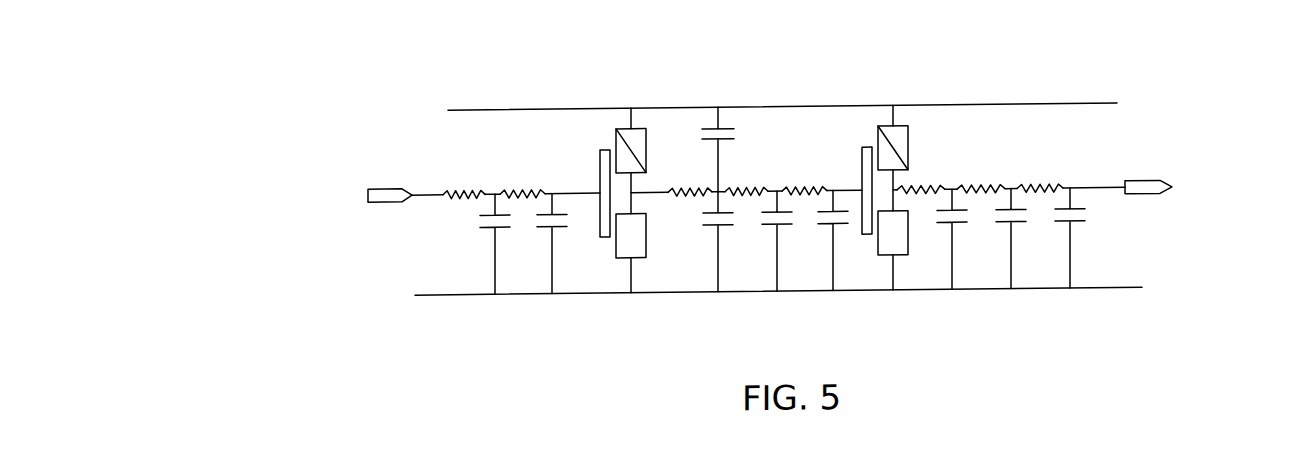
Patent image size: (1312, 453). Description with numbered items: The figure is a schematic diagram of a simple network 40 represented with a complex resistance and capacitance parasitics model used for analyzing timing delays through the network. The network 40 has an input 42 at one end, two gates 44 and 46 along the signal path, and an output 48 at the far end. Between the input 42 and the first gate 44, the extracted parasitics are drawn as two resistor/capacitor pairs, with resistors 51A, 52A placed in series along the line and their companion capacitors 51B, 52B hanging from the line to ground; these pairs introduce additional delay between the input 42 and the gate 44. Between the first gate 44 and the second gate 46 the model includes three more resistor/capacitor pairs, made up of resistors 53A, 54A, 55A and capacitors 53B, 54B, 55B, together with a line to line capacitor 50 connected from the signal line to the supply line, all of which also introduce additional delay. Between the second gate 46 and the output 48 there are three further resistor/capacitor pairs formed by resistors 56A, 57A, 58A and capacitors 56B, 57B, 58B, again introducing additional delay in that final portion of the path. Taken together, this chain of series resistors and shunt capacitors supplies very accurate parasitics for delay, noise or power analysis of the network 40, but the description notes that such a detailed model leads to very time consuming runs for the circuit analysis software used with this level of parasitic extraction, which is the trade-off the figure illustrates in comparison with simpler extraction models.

The network 40 is at (292, 147).
The input 42 is at (390, 190).
The gate 44 is at (615, 121).
The gate 46 is at (907, 122).
The output 48 is at (1160, 190).
The line to line capacitor 50 is at (725, 118).
The resistor 51A is at (463, 185).
The resistor 52A is at (522, 175).
The resistor 53A is at (688, 177).
The resistor 54A is at (748, 188).
The resistor 55A is at (805, 188).
The resistor 56A is at (922, 184).
The resistor 57A is at (982, 186).
The resistor 58A is at (1047, 184).
The capacitor 51B is at (480, 241).
The capacitor 52B is at (545, 241).
The capacitor 53B is at (705, 235).
The capacitor 54B is at (768, 236).
The capacitor 55B is at (828, 233).
The capacitor 56B is at (945, 235).
The capacitor 57B is at (1003, 233).
The capacitor 58B is at (1063, 234).